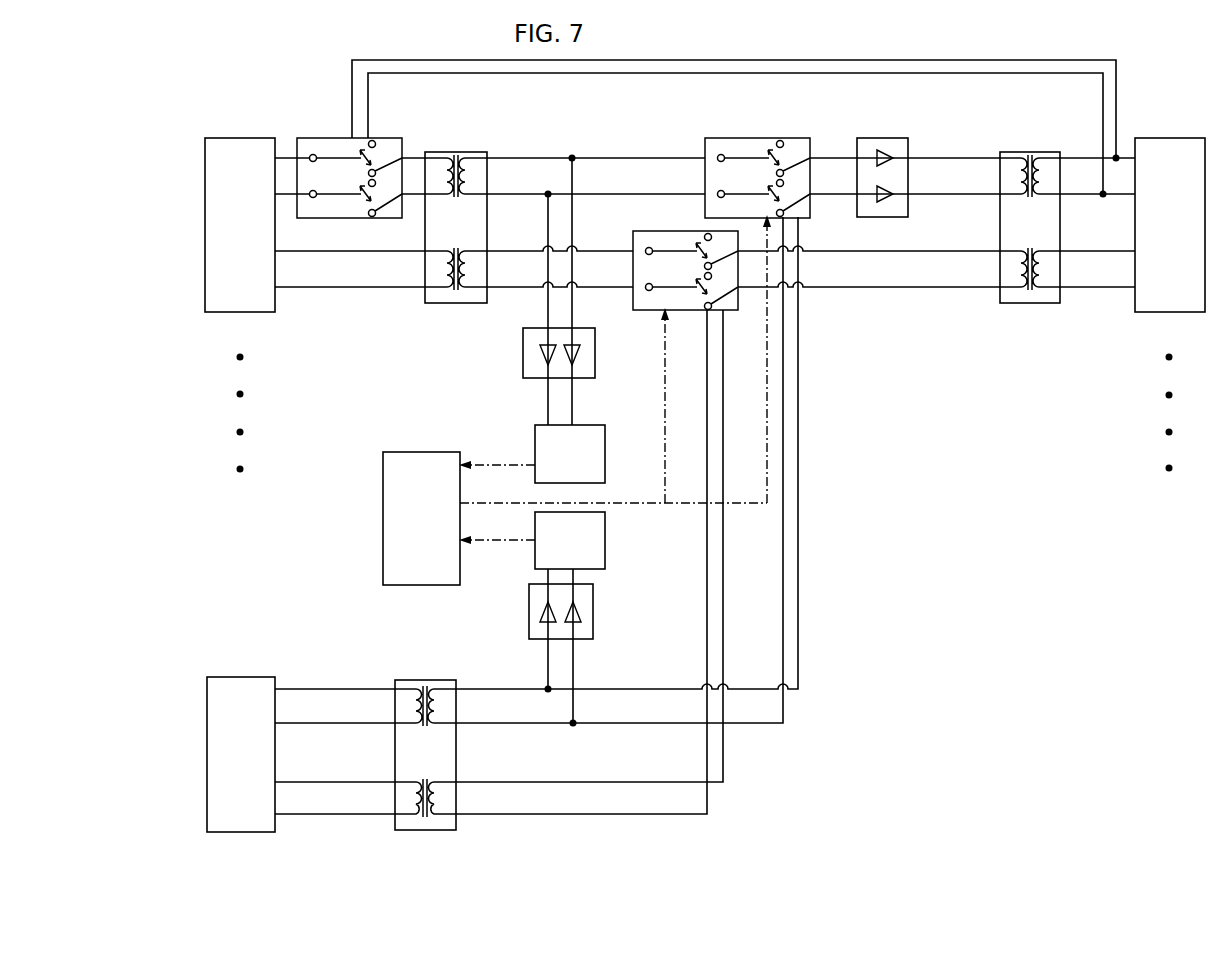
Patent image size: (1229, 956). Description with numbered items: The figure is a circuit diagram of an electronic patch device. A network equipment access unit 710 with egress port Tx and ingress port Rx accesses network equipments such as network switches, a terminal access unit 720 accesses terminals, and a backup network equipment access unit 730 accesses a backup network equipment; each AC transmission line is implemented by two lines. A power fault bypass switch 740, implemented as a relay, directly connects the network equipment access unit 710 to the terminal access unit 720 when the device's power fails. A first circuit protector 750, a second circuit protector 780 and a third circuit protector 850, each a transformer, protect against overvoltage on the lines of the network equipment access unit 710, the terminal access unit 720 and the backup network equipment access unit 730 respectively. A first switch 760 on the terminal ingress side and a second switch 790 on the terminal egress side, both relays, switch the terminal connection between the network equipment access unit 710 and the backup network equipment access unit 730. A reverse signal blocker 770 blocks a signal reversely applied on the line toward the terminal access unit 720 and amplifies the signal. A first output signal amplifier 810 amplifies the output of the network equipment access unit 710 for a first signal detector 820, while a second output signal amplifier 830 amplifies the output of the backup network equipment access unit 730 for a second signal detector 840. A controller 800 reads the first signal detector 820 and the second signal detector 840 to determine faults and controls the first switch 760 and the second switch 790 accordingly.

The network equipment access unit 710 is at (205, 225).
The terminal access unit 720 is at (1145, 312).
The backup network equipment access unit 730 is at (207, 750).
The power fault bypass switch 740 is at (390, 138).
The first circuit protector 750 is at (480, 152).
The first switch 760 is at (762, 138).
The reverse signal blocker 770 is at (887, 138).
The second circuit protector 780 is at (1030, 303).
The second switch 790 is at (683, 232).
The controller 800 is at (383, 520).
The first output signal amplifier 810 is at (523, 352).
The first signal detector 820 is at (595, 425).
The second output signal amplifier 830 is at (529, 612).
The second signal detector 840 is at (605, 548).
The third circuit protector 850 is at (456, 735).